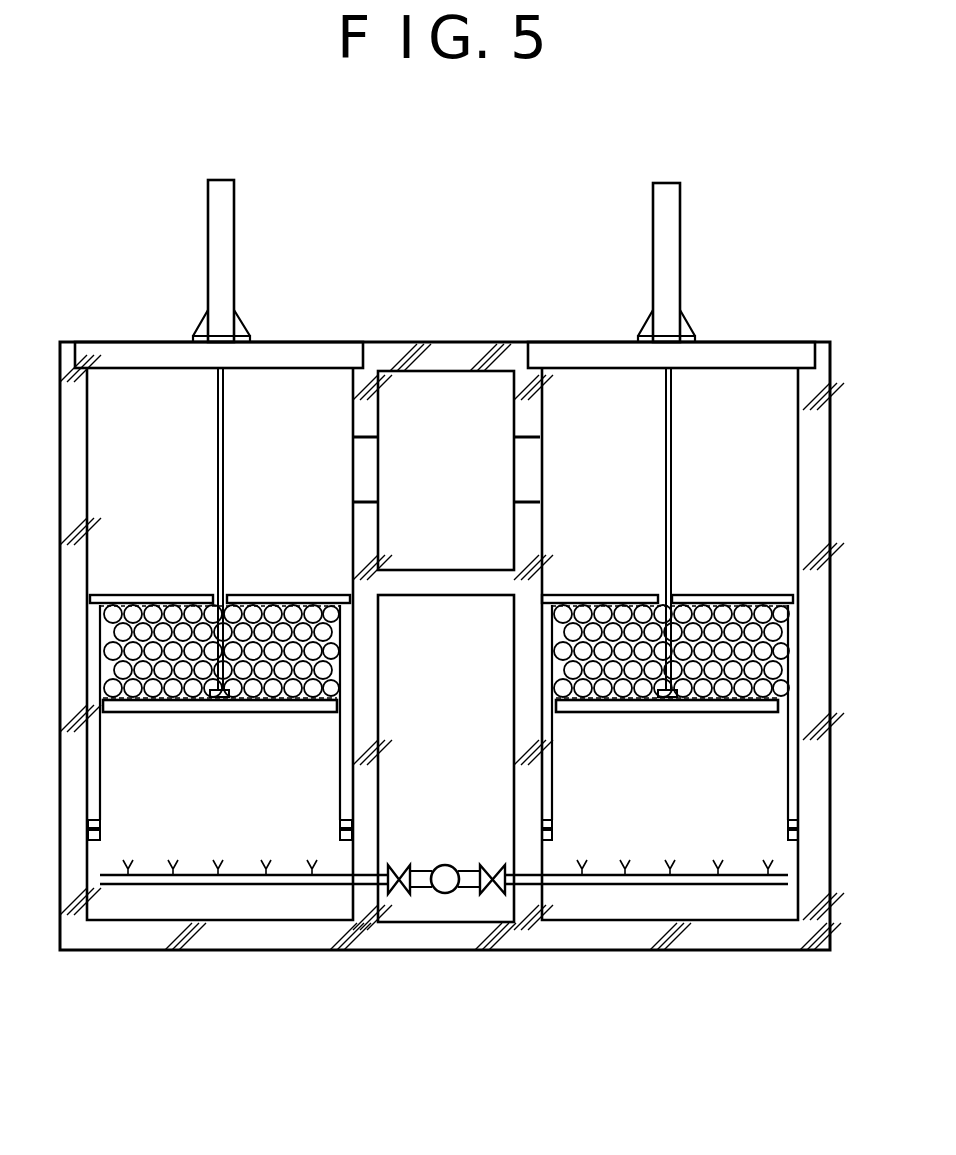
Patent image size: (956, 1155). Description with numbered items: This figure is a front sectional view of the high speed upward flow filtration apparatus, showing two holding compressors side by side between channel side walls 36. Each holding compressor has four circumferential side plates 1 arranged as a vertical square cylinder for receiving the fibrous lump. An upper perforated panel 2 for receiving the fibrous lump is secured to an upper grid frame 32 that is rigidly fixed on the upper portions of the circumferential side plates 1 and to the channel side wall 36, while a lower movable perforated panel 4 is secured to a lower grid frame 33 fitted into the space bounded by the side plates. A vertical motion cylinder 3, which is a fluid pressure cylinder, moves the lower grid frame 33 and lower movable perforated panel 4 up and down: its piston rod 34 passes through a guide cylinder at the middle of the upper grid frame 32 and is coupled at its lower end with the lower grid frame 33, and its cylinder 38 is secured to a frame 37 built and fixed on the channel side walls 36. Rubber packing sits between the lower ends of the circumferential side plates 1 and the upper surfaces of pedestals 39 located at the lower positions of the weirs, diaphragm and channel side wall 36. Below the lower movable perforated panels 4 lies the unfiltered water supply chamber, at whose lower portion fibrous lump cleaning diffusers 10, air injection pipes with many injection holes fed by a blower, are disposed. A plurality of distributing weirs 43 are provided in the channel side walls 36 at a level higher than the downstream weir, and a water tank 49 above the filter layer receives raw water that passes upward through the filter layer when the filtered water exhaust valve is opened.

The circumferential side plate 1 is at (101, 792).
The upper perforated panel 2 is at (262, 596).
The vertical motion cylinder 3 is at (245, 278).
The lower movable perforated panel 4 is at (258, 708).
The fibrous lump cleaning diffuser 10 is at (280, 886).
The upper grid frame 32 is at (160, 594).
The lower grid frame 33 is at (194, 714).
The piston rod 34 is at (224, 466).
The channel side wall 36 is at (72, 458).
The frame 37 is at (323, 356).
The cylinder 38 is at (209, 228).
The pedestal 39 is at (101, 835).
The distributing weir 43 is at (362, 498).
The water tank 49 is at (237, 852).